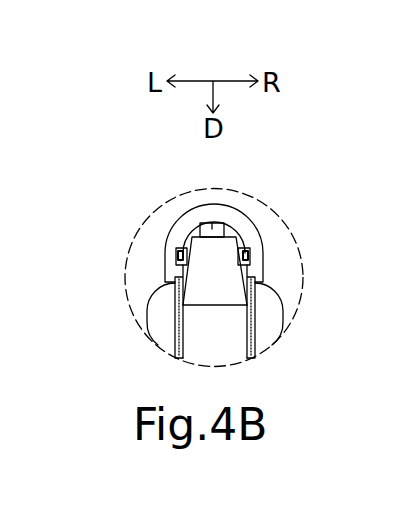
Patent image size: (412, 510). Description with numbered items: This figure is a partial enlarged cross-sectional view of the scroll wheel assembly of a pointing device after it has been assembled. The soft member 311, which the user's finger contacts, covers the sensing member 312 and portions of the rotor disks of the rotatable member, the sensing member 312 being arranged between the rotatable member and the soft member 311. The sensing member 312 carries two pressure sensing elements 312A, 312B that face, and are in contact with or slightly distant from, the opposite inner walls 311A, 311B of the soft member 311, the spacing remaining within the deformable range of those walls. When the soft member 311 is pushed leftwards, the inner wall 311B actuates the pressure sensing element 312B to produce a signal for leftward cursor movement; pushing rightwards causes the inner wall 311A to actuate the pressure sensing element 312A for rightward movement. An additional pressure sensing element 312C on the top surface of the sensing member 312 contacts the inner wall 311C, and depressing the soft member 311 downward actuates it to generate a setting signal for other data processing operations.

The soft member 311 is at (235, 222).
The inner wall 311A is at (177, 260).
The inner wall 311B is at (250, 260).
The inner wall 311C is at (215, 222).
The sensing member 312 is at (205, 267).
The pressure sensing element 312A is at (200, 228).
The pressure sensing element 312B is at (250, 262).
The pressure sensing element 312C is at (190, 240).